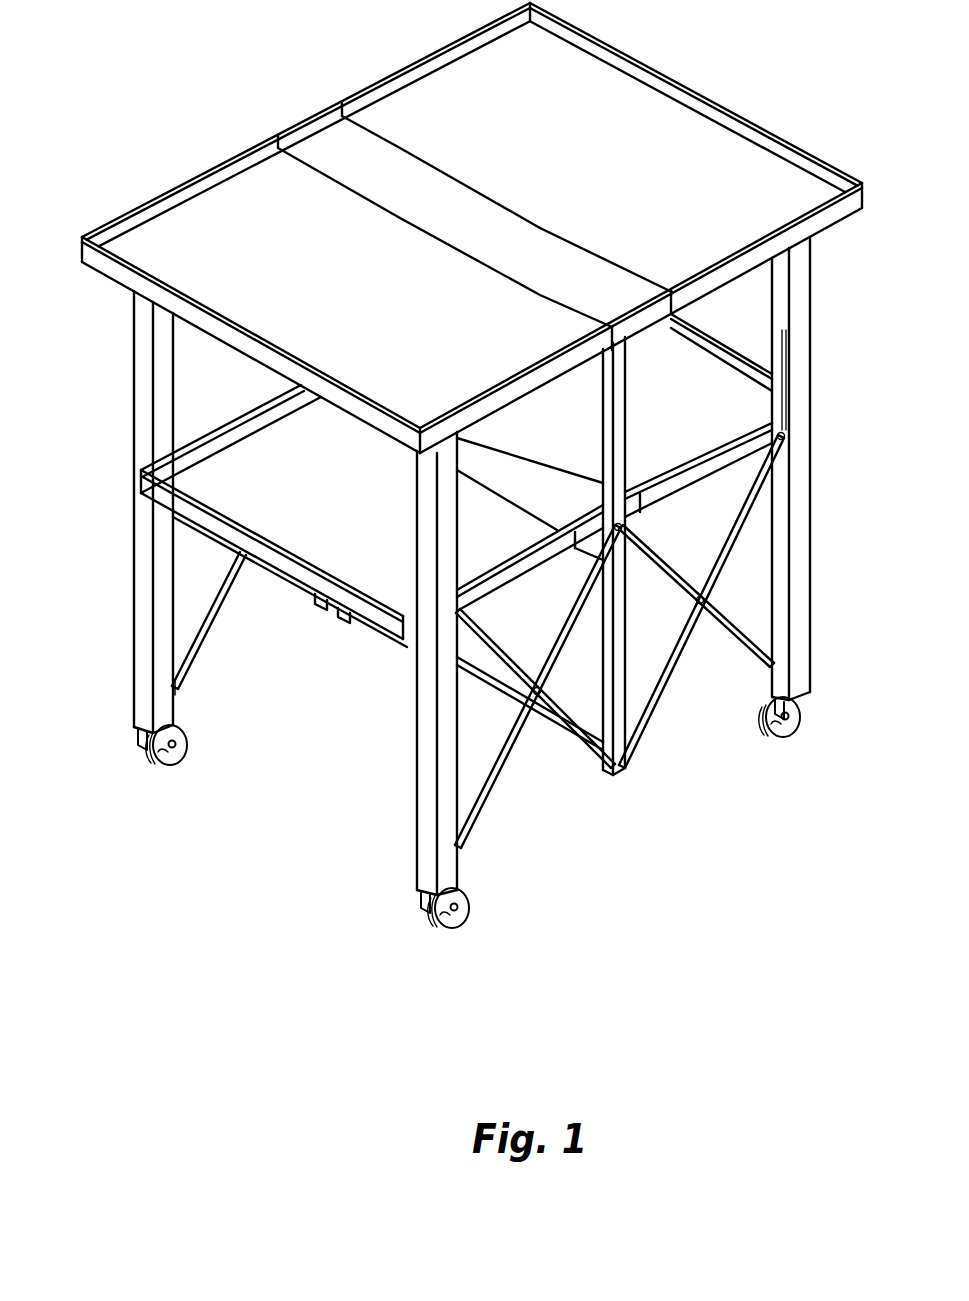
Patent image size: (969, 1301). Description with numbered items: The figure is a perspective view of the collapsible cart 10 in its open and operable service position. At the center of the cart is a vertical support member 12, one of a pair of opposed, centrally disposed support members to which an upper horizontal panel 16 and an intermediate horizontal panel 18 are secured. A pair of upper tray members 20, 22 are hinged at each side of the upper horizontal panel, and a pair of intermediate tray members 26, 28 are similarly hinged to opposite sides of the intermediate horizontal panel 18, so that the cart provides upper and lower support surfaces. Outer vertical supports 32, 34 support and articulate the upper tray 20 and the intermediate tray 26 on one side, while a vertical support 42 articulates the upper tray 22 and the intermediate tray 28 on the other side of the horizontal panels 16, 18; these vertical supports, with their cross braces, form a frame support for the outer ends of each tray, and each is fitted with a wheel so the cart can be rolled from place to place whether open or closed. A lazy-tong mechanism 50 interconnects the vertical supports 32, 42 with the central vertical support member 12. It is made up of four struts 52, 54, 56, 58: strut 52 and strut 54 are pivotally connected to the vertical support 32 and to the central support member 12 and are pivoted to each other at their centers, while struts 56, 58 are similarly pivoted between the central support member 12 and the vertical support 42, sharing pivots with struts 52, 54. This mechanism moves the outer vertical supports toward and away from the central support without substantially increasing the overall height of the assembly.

The collapsible cart 10 is at (742, 79).
The vertical support member 12 is at (627, 406).
The upper horizontal panel 16 is at (528, 223).
The intermediate horizontal panel 18 is at (533, 436).
The upper tray member 20 is at (184, 218).
The upper tray member 22 is at (399, 103).
The intermediate tray member 26 is at (323, 594).
The intermediate tray member 28 is at (693, 359).
The vertical support 32 is at (416, 762).
The vertical support 34 is at (130, 621).
The vertical support 42 is at (813, 532).
The lazy-tong mechanism 50 is at (478, 641).
The strut 52 is at (500, 772).
The strut 54 is at (493, 647).
The strut 56 is at (658, 547).
The strut 58 is at (727, 567).